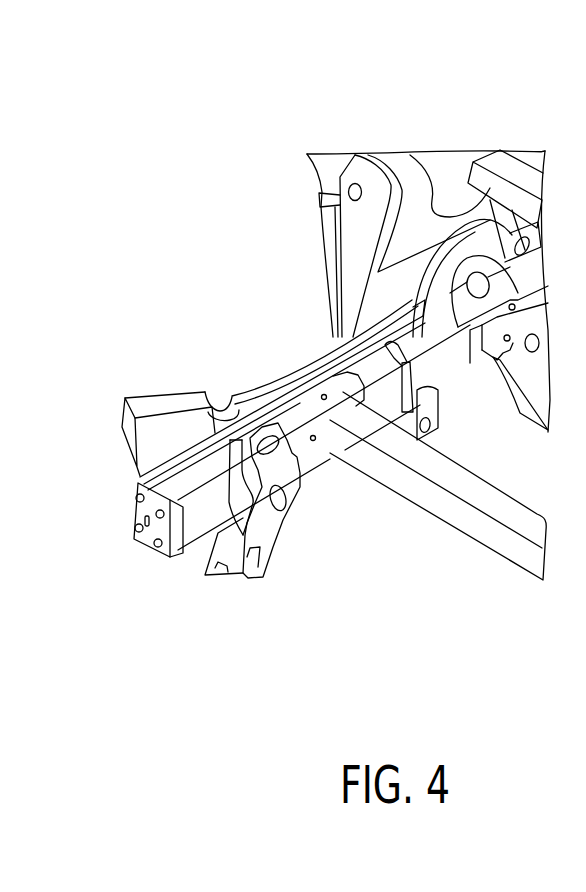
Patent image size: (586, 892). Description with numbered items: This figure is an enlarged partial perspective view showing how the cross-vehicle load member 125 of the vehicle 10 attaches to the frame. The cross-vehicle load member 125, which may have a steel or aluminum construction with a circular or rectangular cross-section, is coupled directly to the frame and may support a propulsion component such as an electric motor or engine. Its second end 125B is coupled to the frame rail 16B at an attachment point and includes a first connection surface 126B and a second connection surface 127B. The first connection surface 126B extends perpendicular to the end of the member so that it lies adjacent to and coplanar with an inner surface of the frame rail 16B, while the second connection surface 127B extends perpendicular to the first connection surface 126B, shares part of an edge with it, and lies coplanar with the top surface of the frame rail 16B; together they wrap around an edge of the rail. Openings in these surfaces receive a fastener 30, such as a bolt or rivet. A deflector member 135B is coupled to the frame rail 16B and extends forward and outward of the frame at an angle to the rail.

The vehicle 10 is at (374, 115).
The second end 125B is at (320, 335).
The fastener 30 is at (313, 437).
The deflector member 135B is at (186, 396).
The frame rail 16B is at (174, 488).
The first connection surface 126B is at (314, 443).
The second connection surface 127B is at (344, 385).
The cross-vehicle load member 125 is at (504, 540).